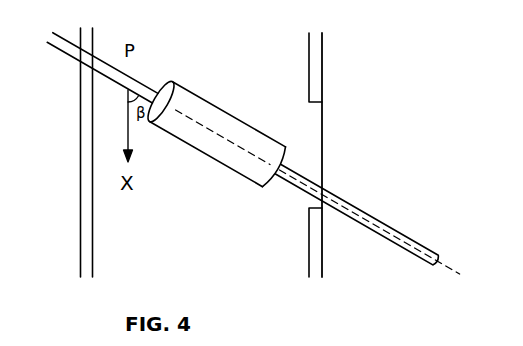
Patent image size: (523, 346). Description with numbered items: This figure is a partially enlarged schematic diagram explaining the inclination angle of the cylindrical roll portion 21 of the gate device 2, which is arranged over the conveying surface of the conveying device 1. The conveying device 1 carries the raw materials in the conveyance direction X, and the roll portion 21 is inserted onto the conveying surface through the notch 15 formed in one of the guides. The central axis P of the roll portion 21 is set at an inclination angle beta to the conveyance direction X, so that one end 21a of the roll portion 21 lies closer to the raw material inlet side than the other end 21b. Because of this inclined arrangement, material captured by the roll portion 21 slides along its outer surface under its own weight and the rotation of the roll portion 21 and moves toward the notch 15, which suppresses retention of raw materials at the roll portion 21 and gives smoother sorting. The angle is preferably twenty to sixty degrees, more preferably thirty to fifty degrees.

The conveying device 1 is at (323, 80).
The notch 15 is at (313, 145).
The gate device 2 is at (363, 208).
The roll portion 21 is at (222, 152).
The one end of the roll portion 21a is at (170, 85).
The other end of the roll portion 21b is at (285, 148).